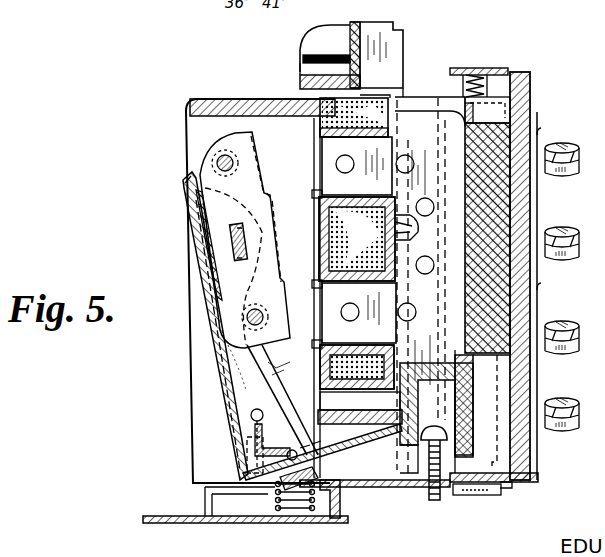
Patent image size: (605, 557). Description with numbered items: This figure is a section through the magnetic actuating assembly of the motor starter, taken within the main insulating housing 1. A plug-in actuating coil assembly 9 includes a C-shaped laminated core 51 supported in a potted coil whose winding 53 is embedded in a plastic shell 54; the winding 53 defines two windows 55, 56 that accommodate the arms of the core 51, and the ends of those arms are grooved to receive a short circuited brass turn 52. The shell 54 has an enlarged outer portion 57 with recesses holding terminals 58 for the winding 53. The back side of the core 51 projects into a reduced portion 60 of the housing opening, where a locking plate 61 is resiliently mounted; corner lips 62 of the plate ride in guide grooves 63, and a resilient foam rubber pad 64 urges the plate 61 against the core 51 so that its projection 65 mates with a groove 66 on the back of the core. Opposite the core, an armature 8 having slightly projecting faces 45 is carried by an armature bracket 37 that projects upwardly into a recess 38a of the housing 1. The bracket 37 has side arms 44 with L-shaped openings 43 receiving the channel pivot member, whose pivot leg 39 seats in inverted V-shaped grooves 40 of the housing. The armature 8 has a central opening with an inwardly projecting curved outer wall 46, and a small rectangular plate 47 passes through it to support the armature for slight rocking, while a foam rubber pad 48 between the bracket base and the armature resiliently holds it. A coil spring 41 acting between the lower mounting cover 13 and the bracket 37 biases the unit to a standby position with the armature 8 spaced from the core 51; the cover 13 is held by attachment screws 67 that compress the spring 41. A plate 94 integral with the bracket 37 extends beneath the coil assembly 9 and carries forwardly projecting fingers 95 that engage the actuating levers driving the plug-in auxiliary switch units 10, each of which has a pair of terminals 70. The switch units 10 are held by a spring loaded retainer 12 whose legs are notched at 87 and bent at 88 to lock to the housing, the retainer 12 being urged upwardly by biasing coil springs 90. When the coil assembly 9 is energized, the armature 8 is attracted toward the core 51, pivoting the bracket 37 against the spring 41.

The main insulating housing 1 is at (198, 97).
The armature 8 is at (246, 163).
The plug-in actuating coil assembly 9 is at (396, 22).
The plug-in auxiliary switch units 10 is at (538, 134).
The spring loaded retainer 12 is at (478, 68).
The lower mounting cover 13 is at (160, 515).
The armature bracket 37 is at (198, 378).
The recess 38a is at (190, 131).
The pivot leg 39 is at (283, 380).
The inverted V-shaped grooves 40 is at (247, 447).
The coil spring 41 is at (262, 520).
The L-shaped opening 43 is at (300, 448).
The side arms 44 is at (266, 364).
The projecting faces 45 is at (262, 170).
The curved outer wall 46 is at (240, 250).
The rectangular plate 47 is at (247, 242).
The foam rubber pad 48 is at (202, 312).
The C-shaped laminated core 51 is at (413, 113).
The short circuited turn 52 is at (330, 150).
The winding 53 is at (364, 97).
The plastic cover or shell 54 is at (318, 128).
The window 55 is at (362, 197).
The window 56 is at (370, 283).
The enlarged outer portion 57 is at (303, 48).
The terminals 58 is at (352, 50).
The reduced portion 60 is at (436, 100).
The locking plate 61 is at (470, 194).
The lips 62 is at (508, 97).
The guide grooves 63 is at (508, 118).
The resilient foam rubber pad 64 is at (520, 190).
The projection 65 is at (436, 262).
The groove 66 is at (428, 210).
The attachment screws 67 is at (432, 502).
The terminals 70 is at (578, 166).
The notches 87 is at (510, 489).
The L-shaped bend 88 is at (484, 497).
The biasing coil springs 90 is at (490, 68).
The plate 94 is at (342, 490).
The ears or fingers 95 is at (398, 452).